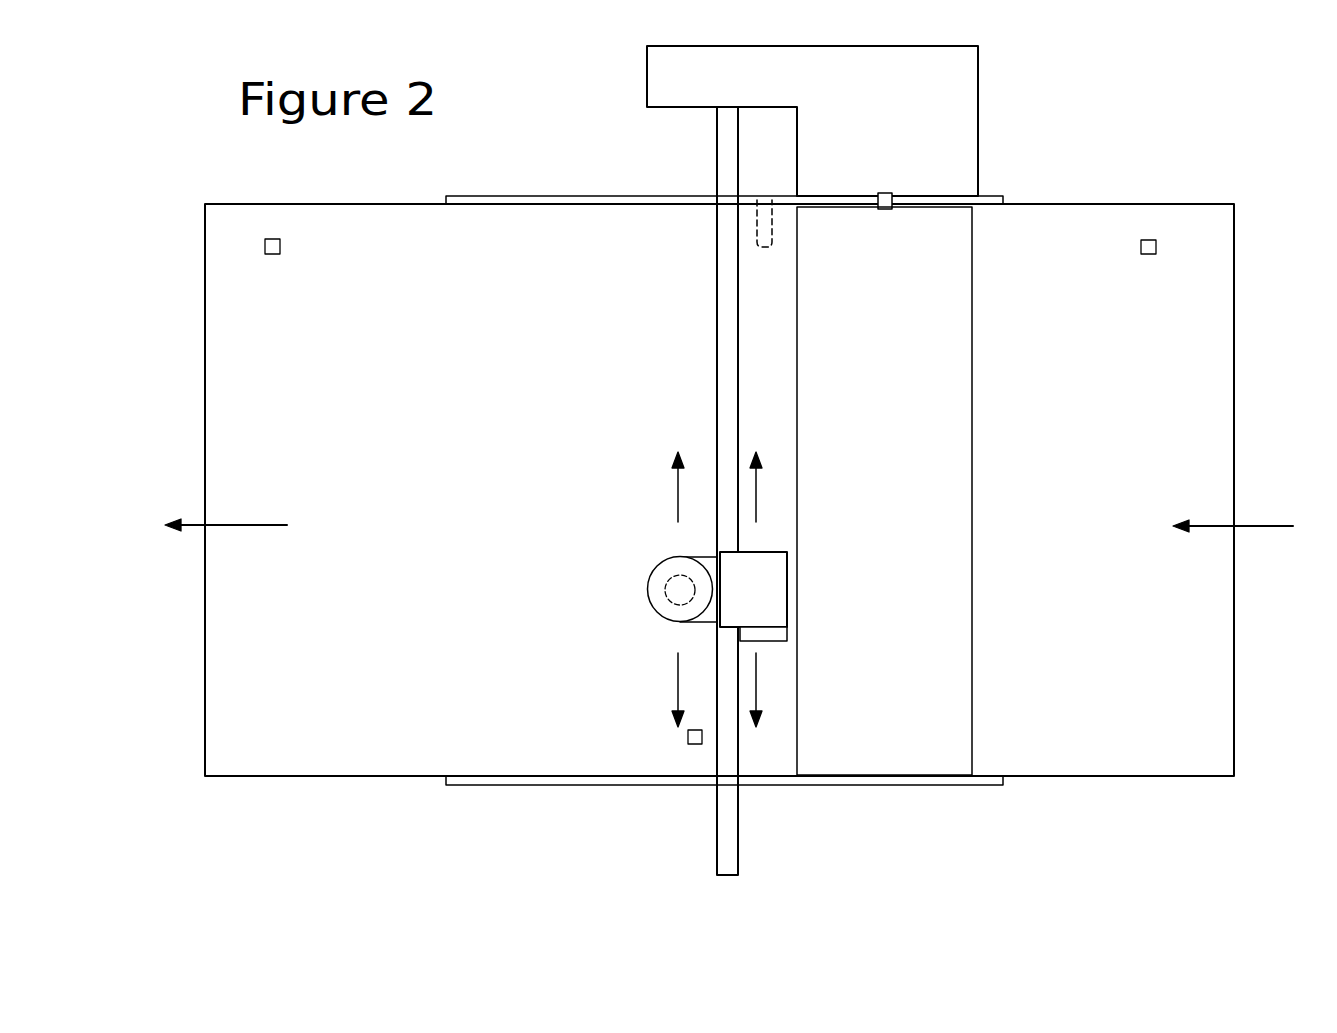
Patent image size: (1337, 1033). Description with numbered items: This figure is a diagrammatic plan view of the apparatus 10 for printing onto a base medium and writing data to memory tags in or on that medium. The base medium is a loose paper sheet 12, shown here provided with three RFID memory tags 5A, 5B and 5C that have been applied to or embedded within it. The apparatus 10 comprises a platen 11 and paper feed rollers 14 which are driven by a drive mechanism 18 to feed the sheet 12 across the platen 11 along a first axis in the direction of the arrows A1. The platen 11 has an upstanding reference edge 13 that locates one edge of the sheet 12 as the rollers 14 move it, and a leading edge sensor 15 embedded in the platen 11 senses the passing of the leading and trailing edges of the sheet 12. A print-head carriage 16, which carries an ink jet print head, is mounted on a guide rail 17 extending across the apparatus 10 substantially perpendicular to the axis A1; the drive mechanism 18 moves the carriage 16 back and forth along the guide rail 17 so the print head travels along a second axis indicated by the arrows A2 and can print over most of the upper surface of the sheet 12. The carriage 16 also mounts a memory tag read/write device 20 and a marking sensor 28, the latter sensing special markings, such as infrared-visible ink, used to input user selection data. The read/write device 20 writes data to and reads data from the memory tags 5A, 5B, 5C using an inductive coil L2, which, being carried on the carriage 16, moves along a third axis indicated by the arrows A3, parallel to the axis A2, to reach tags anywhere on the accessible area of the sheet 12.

The apparatus 10 is at (1100, 138).
The platen 11 is at (535, 781).
The sheet 12 is at (1236, 308).
The reference edge 13 is at (562, 197).
The paper feed rollers 14 is at (946, 748).
The leading edge sensor 15 is at (765, 237).
The print-head carriage 16 is at (753, 589).
The guide rail 17 is at (715, 802).
The drive mechanism 18 is at (812, 127).
The memory tag read/write device 20 is at (645, 588).
The marking sensor 28 is at (780, 635).
The memory tag 5A is at (280, 242).
The memory tag 5B is at (686, 745).
The memory tag 5C is at (1156, 241).
The first axis direction arrows A1 is at (240, 525).
The second axis direction arrows A2 is at (756, 500).
The third axis direction arrows A3 is at (676, 487).
The inductive coil L2 is at (680, 590).